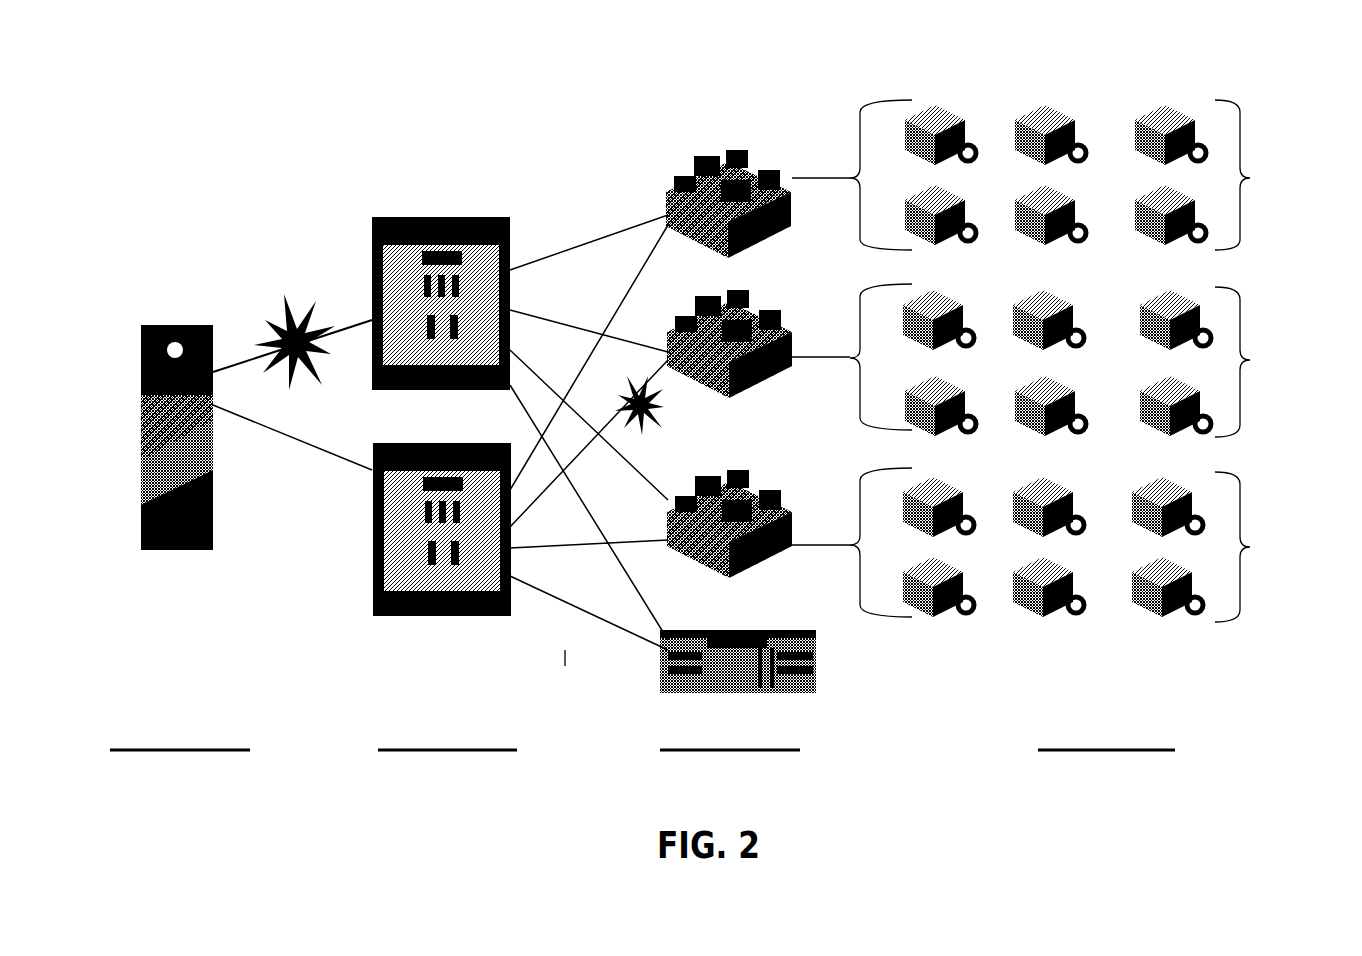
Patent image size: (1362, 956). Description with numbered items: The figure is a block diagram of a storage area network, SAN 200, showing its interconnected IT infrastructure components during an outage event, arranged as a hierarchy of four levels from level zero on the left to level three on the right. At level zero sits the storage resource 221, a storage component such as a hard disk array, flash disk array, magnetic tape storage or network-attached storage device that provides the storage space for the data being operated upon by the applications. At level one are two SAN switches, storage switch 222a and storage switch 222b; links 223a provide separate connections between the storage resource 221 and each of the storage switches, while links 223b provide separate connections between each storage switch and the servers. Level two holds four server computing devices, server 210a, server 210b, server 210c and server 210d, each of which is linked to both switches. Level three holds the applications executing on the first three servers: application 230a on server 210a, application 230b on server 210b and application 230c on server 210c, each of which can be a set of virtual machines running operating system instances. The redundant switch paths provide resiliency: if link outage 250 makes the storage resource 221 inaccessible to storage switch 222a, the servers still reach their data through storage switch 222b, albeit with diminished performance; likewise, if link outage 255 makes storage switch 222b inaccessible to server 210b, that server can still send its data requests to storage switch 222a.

The SAN 200 is at (128, 62).
The storage resource 221 is at (173, 469).
The storage switch 222a is at (445, 282).
The storage switch 222b is at (435, 554).
The links 223a is at (316, 239).
The links 223b is at (605, 214).
The link outage 250 is at (266, 324).
The link outage 255 is at (662, 408).
The server 210a is at (760, 143).
The server 210b is at (791, 304).
The server 210c is at (779, 478).
The server 210d is at (795, 628).
The application 230a is at (1250, 178).
The application 230b is at (1250, 360).
The application 230c is at (1250, 547).